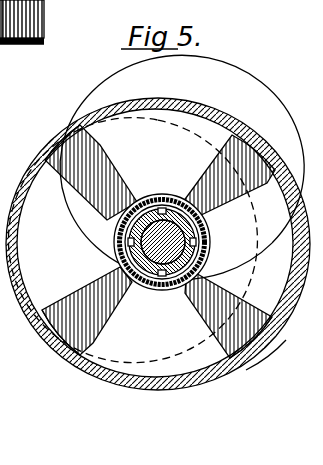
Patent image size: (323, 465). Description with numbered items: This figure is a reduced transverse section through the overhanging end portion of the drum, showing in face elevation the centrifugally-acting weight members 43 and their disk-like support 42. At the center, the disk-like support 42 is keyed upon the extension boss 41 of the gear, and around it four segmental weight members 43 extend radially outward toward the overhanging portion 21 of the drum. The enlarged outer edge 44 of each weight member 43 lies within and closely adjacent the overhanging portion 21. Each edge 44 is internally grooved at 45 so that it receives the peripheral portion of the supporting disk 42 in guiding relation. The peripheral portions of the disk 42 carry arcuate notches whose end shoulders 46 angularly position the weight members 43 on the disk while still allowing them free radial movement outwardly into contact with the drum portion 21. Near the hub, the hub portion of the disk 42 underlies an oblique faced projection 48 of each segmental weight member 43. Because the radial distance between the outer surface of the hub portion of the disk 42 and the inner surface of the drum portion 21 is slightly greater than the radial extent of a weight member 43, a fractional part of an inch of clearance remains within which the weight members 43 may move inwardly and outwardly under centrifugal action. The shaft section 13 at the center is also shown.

The shaft 13 is at (195, 235).
The overhanging portion of the drum 21 is at (210, 123).
The extension boss 41 is at (204, 257).
The disk-like support 42 is at (250, 337).
The weight members 43 is at (196, 156).
The enlarged outer edge 44 is at (143, 113).
The groove 45 is at (224, 120).
The end shoulders 46 is at (81, 125).
The oblique faced projection 48 is at (160, 200).